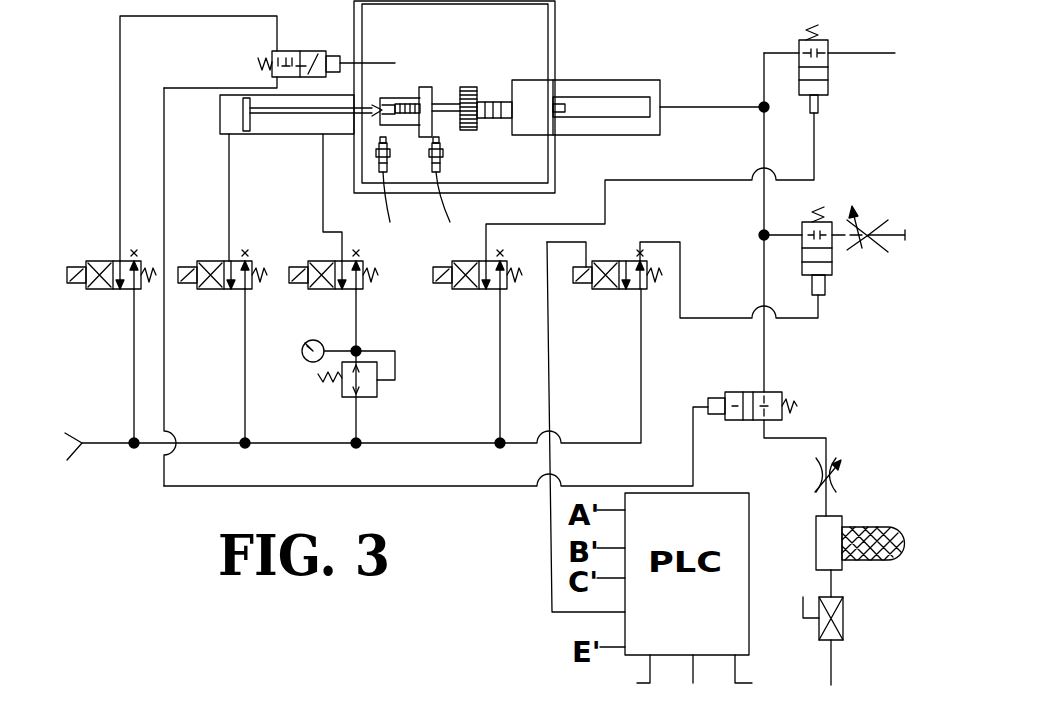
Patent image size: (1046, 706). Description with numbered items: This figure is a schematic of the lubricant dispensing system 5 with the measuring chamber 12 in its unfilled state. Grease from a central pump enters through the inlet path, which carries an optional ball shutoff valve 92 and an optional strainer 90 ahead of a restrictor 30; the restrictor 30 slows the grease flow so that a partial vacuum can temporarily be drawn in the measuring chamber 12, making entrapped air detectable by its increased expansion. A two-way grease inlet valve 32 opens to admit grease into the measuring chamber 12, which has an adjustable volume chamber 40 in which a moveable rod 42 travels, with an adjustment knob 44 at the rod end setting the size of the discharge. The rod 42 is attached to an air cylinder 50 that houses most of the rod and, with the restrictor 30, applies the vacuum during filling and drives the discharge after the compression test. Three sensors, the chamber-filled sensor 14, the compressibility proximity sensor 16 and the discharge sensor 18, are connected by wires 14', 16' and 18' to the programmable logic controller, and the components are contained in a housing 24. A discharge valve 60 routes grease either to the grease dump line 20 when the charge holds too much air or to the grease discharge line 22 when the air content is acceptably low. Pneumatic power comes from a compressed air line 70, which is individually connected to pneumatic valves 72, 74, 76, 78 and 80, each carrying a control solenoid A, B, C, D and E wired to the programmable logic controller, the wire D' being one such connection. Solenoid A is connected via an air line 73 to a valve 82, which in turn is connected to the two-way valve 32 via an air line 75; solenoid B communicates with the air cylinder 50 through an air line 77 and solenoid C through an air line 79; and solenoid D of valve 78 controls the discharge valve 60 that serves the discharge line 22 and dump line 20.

The lubricant dispensing system 5 is at (848, 147).
The measuring chamber 12 is at (617, 82).
The chamber-filled sensor 14 is at (330, 189).
The wire 14' is at (507, 439).
The compressibility proximity sensor 16 is at (411, 206).
The wire 16' is at (617, 439).
The discharge sensor 18 is at (420, 77).
The wire 18' is at (699, 680).
The grease dump line 20 is at (850, 52).
The grease discharge line 22 is at (900, 237).
The housing 24 is at (445, 705).
The restrictor 30 is at (840, 466).
The two-way grease inlet valve 32 is at (782, 392).
The adjustable volume chamber 40 is at (612, 107).
The moveable rod 42 is at (565, 104).
The adjustment knob 44 is at (472, 130).
The air cylinder 50 is at (282, 125).
The discharge valve 60 is at (822, 222).
The compressed air line 70 is at (105, 447).
The pneumatic valve 72 is at (88, 292).
The air line 73 is at (113, 47).
The pneumatic valve 74 is at (315, 292).
The air line 75 is at (425, 487).
The pneumatic valve 76 is at (197, 292).
The air line 77 is at (322, 160).
The pneumatic valve 78 is at (615, 290).
The air line 79 is at (227, 203).
The pneumatic valve 80 is at (462, 290).
The valve 82 is at (300, 52).
The strainer 90 is at (860, 526).
The ball shutoff valve 92 is at (843, 627).
The control solenoid A is at (73, 265).
The control solenoid B is at (298, 292).
The control solenoid C is at (186, 265).
The control solenoid D is at (572, 310).
The wire D' is at (529, 358).
The control solenoid E is at (441, 290).